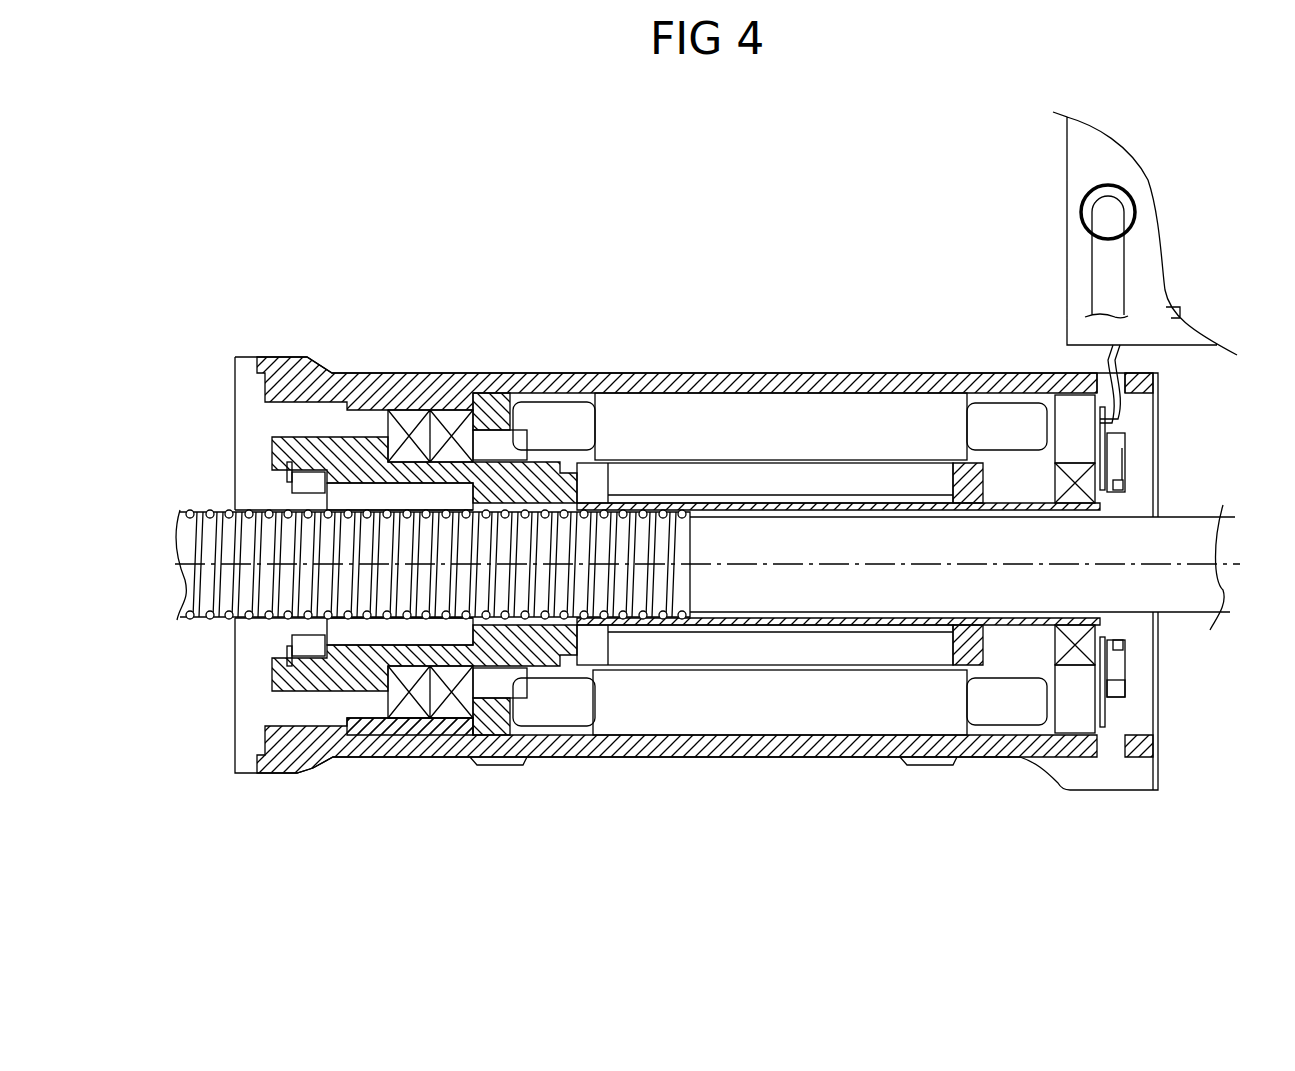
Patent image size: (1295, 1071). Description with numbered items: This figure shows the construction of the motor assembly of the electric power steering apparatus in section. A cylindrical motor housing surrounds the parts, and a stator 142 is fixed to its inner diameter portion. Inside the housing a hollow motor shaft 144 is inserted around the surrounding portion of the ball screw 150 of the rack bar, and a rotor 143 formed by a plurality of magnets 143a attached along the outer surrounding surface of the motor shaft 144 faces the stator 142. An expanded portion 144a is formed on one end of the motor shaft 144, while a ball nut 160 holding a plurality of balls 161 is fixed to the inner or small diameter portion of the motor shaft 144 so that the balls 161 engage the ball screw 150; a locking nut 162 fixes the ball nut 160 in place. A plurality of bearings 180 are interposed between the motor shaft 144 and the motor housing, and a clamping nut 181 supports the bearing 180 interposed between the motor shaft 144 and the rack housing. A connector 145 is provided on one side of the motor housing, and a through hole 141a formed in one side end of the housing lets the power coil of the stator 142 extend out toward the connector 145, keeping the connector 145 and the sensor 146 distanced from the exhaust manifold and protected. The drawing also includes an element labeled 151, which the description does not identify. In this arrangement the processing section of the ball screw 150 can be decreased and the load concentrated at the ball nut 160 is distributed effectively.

The through hole 141a is at (1117, 355).
The stator 142 is at (662, 417).
The rotor 143 is at (780, 667).
The magnets 143a is at (968, 564).
The hollow motor shaft 144 is at (553, 462).
The expanded portion 144a is at (303, 447).
The connector 145 is at (1080, 235).
The sensor 146 is at (1125, 660).
The ball screw 150 is at (593, 605).
The rotor core 151 is at (802, 533).
The ball nut 160 is at (470, 705).
The balls 161 is at (387, 610).
The locking nut 162 is at (175, 620).
The bearings 180 is at (407, 705).
The clamping nut 181 is at (345, 740).